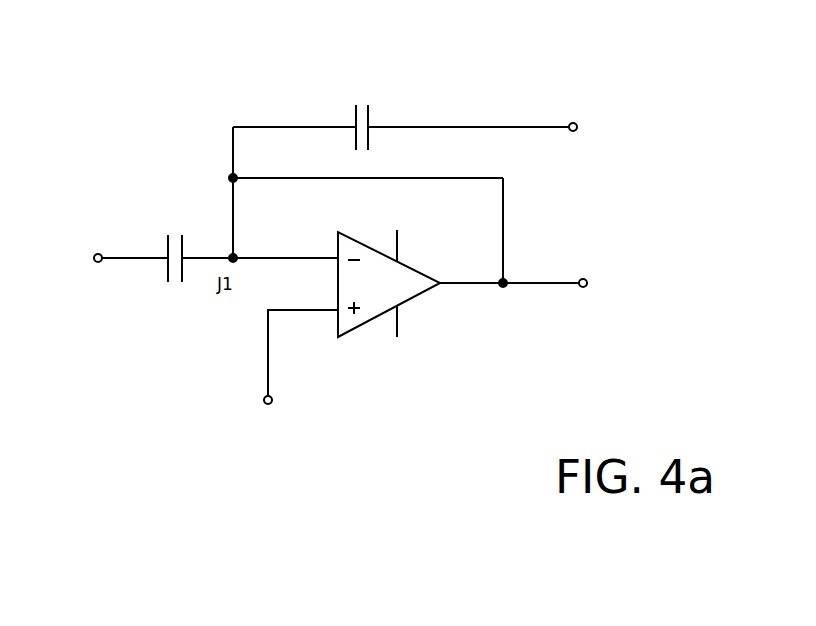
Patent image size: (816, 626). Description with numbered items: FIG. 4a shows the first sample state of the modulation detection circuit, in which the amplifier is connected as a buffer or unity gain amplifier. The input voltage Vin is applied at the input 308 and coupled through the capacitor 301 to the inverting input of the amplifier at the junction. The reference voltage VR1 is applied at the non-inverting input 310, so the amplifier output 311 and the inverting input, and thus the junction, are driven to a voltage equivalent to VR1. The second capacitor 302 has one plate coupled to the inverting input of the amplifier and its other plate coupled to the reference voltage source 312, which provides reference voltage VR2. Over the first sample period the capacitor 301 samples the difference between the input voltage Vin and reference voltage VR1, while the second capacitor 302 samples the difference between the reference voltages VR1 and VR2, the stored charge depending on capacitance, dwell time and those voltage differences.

The capacitor 301 is at (149, 240).
The second capacitor 302 is at (352, 106).
The input 308 is at (74, 259).
The non-inverting input 310 is at (267, 415).
The output 311 is at (599, 269).
The reference voltage source 312 is at (598, 127).